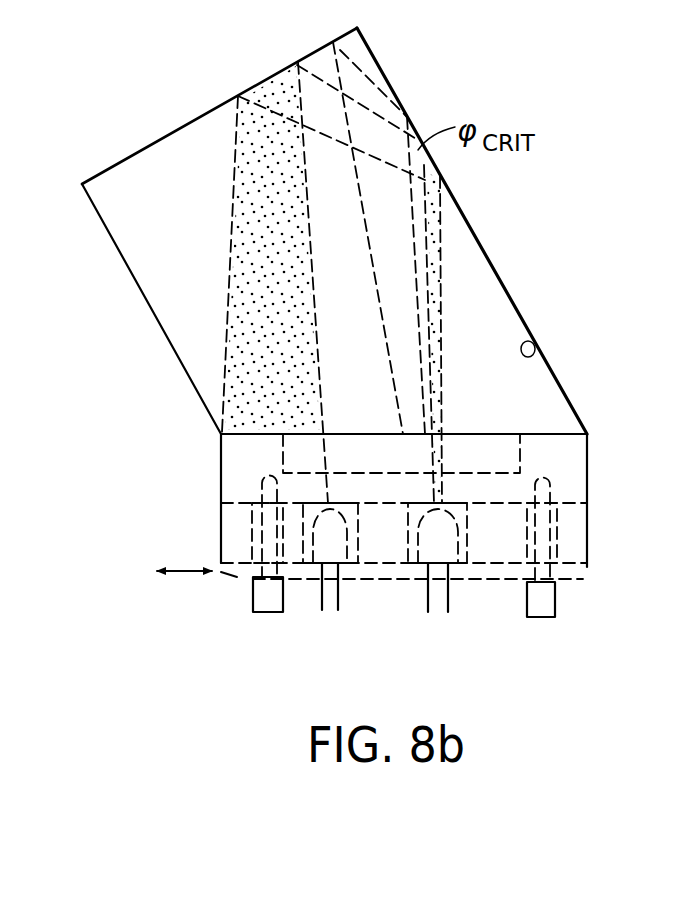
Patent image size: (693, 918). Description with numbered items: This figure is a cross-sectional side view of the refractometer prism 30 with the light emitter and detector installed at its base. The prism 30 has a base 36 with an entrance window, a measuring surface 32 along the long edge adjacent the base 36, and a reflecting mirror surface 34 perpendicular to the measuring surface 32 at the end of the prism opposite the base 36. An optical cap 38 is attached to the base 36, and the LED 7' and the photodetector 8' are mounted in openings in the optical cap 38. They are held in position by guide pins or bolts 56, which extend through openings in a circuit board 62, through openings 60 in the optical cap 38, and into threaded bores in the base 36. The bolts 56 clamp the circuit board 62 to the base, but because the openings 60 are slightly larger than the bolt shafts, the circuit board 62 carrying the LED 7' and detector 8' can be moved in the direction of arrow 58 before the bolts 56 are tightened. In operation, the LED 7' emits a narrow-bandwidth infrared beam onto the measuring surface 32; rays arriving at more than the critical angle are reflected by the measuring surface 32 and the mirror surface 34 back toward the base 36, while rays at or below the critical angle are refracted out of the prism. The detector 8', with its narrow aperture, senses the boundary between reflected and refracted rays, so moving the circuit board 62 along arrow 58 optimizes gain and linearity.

The reflecting mirror surface 34 is at (193, 118).
The prism 30 is at (490, 257).
The measuring surface 32 is at (533, 340).
The base 36 is at (588, 454).
The optical cap 38 is at (577, 545).
The openings 60 is at (252, 528).
The guide pins or bolts 56 is at (253, 598).
The photodetector 8' is at (320, 587).
The LED 7' is at (422, 587).
The arrow 58 is at (183, 568).
The circuit board 62 is at (223, 575).